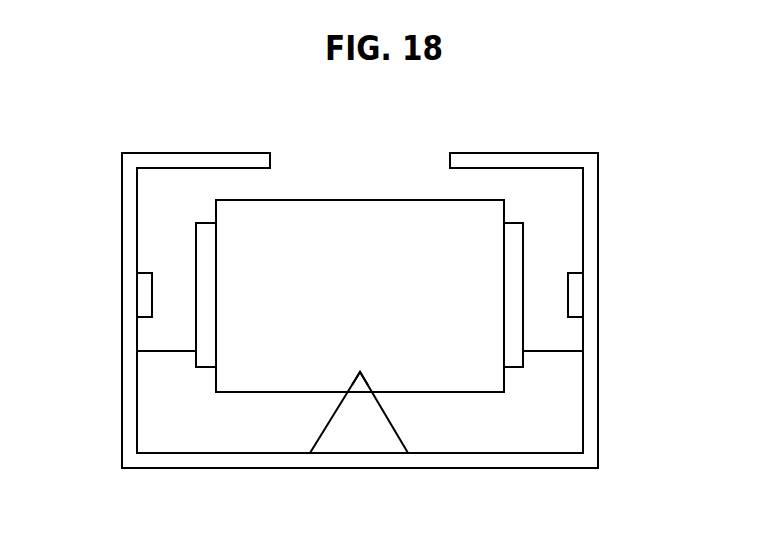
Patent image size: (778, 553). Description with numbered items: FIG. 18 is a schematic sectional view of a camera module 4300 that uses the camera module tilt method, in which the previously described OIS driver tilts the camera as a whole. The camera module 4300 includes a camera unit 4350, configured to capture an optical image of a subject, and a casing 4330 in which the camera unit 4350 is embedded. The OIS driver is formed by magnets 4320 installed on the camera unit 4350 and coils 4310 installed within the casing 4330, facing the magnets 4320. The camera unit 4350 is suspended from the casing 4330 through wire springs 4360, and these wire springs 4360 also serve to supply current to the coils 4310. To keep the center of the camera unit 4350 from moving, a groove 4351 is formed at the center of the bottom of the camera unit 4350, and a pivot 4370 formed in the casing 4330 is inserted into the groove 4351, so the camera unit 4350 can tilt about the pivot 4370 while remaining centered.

The camera module 4300 is at (622, 214).
The coils 4310 is at (575, 292).
The magnets 4320 is at (517, 247).
The casing 4330 is at (131, 391).
The camera unit 4350 is at (377, 212).
The groove 4351 is at (353, 377).
The wire springs 4360 is at (556, 351).
The pivot 4370 is at (360, 440).